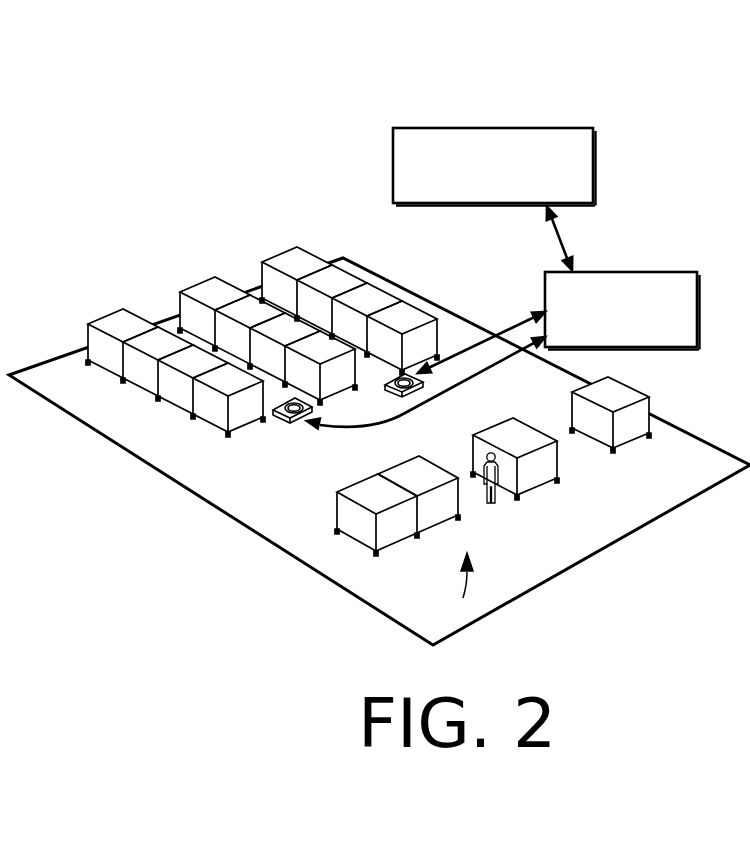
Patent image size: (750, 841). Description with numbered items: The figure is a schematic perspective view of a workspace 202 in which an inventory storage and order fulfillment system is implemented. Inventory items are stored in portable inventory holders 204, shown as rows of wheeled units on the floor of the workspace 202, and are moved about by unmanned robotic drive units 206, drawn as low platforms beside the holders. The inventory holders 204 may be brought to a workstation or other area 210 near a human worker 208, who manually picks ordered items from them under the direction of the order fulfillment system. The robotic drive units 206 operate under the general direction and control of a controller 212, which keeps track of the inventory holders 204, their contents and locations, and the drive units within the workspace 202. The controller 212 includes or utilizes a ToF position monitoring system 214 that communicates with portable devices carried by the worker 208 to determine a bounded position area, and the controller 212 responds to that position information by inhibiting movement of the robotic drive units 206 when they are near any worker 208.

The workspace 202 is at (292, 490).
The portable inventory holder 204 is at (330, 278).
The unmanned robotic drive unit 206 is at (393, 393).
The human worker 208 is at (492, 503).
The workstation 210 is at (465, 587).
The controller 212 is at (660, 282).
The ToF position monitoring system 214 is at (565, 134).